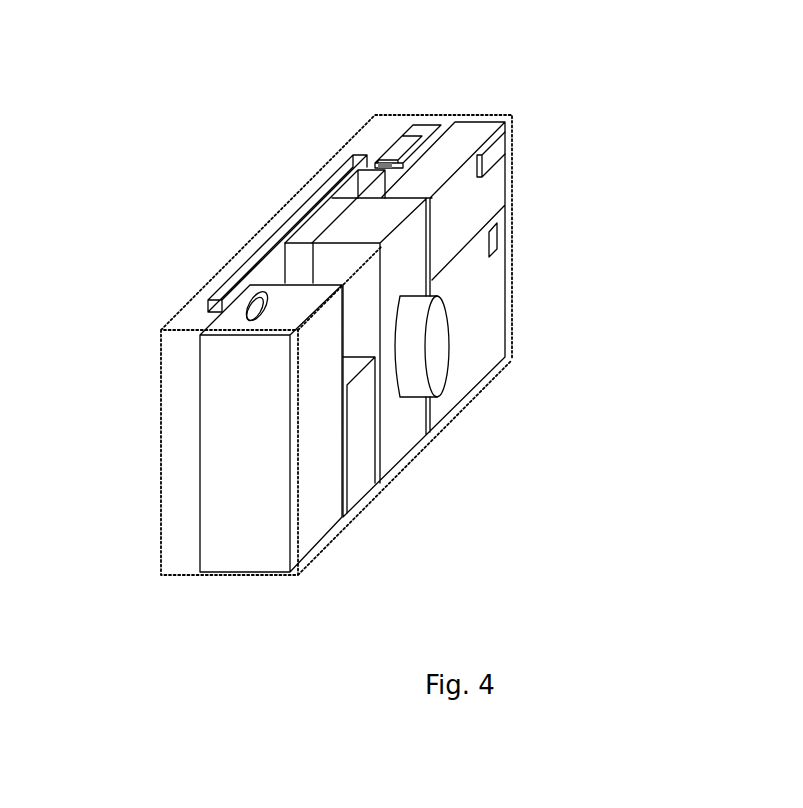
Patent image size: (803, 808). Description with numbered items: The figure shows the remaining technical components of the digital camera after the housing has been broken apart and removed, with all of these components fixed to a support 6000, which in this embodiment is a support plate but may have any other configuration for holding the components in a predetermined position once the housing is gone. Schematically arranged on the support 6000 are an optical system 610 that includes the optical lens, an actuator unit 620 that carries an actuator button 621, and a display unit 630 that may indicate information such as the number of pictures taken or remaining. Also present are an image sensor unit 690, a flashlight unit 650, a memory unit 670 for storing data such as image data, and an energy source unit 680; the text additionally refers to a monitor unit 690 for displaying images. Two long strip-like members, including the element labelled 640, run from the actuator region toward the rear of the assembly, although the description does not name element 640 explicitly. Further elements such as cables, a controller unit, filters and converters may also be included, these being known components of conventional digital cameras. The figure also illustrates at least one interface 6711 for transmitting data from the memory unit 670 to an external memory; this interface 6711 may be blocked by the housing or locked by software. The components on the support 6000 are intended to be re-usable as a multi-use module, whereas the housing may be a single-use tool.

The support 6000 is at (323, 542).
The optical system 610 is at (400, 438).
The actuator unit 620 is at (230, 422).
The actuator button 621 is at (248, 303).
The display unit 630 is at (405, 143).
The flexible circuit board 640 is at (277, 233).
The flashlight unit 650 is at (486, 160).
The memory unit 670 is at (483, 323).
The interface 6711 is at (492, 238).
The energy source unit 680 is at (360, 487).
The image sensor unit 690 is at (325, 215).